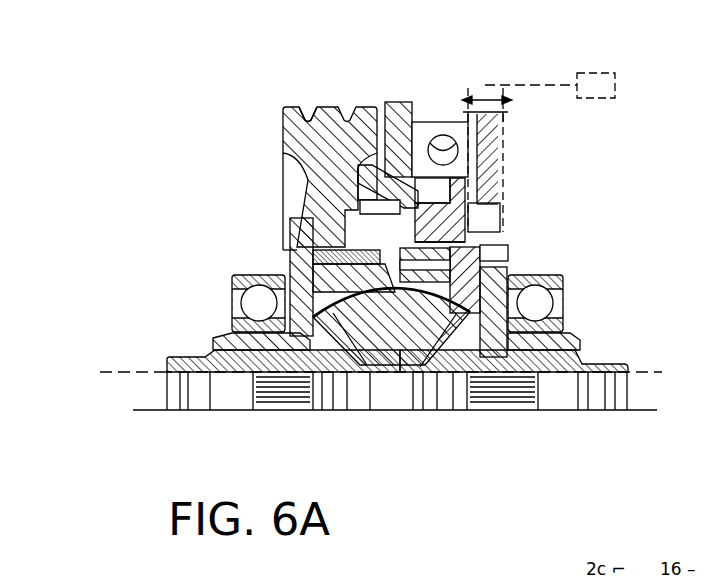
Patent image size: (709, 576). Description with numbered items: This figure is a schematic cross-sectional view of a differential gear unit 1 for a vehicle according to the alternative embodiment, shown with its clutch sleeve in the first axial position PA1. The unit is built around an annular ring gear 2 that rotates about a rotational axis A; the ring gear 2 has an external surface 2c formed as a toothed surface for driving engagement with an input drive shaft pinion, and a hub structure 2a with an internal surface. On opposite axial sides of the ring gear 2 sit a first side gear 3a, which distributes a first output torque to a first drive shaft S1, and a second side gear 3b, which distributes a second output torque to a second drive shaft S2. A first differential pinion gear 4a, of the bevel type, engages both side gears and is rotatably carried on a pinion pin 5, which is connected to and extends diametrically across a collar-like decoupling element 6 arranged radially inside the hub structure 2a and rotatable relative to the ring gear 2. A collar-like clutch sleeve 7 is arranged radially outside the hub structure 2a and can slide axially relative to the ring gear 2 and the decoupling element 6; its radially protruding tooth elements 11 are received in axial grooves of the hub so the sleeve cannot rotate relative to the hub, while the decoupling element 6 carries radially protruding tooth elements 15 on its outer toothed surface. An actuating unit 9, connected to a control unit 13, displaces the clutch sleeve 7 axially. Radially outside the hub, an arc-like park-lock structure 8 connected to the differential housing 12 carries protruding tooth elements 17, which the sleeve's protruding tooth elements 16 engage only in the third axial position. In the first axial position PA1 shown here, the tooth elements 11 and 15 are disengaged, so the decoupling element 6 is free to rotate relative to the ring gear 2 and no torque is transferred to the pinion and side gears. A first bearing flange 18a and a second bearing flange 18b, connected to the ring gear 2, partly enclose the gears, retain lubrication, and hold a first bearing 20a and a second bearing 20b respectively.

The differential gear unit 1 is at (188, 131).
The ring gear 2 is at (318, 145).
The hub structure 2a is at (482, 258).
The external surface 2c is at (298, 100).
The first side gear 3a is at (172, 355).
The second side gear 3b is at (610, 364).
The first differential pinion gear 4a is at (405, 318).
The pinion pin 5 is at (388, 378).
The decoupling element 6 is at (297, 262).
The clutch sleeve 7 is at (485, 210).
The park-lock structure 8 is at (390, 118).
The actuating unit 9 is at (500, 130).
The radially protruding tooth elements 11 is at (483, 238).
The differential housing 12 is at (493, 138).
The control unit 13 is at (617, 80).
The radially protruding tooth elements 15 is at (485, 225).
The protruding tooth elements 16 is at (443, 190).
The protruding tooth elements 17 is at (372, 170).
The first bearing flange 18a is at (213, 340).
The second bearing flange 18b is at (580, 338).
The first bearing 20a is at (232, 285).
The second bearing 20b is at (565, 283).
The rotational axis A is at (150, 410).
The first drive shaft S1 is at (131, 372).
The second drive shaft S2 is at (662, 372).
The first axial position PA1 is at (520, 160).